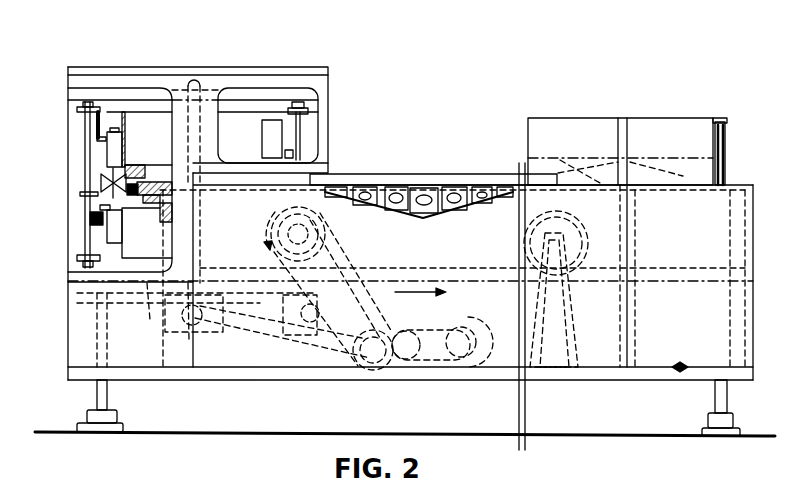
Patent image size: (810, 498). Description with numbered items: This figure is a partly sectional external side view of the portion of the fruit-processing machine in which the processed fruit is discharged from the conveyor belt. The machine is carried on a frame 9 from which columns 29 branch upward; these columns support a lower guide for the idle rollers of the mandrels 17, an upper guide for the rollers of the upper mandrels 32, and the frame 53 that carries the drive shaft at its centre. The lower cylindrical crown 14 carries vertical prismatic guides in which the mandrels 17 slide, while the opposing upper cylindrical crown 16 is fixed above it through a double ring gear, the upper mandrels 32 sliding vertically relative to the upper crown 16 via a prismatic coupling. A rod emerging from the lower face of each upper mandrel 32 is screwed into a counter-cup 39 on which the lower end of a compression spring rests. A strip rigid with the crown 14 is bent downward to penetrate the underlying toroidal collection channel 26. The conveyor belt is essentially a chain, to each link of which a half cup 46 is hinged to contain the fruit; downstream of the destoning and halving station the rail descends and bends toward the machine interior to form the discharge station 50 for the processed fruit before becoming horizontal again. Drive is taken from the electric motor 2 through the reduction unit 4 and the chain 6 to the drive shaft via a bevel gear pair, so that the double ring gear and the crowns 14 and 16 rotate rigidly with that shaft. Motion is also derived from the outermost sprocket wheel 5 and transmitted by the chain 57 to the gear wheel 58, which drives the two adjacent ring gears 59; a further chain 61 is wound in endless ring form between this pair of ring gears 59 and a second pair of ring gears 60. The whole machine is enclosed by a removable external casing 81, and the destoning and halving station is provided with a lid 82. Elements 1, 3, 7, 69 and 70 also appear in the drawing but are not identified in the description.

The machine frame 1 is at (610, 381).
The electric motor 2 is at (497, 350).
The sprocket 3 is at (457, 370).
The reduction unit 4 is at (400, 323).
The outer sprocket wheel 5 is at (375, 357).
The chain 6 is at (250, 343).
The drive rod 7 is at (189, 340).
The frame 9 is at (150, 320).
The lower cylindrical crown 14 is at (136, 247).
The upper cylindrical crown 16 is at (136, 141).
The mandrels 17 is at (113, 250).
The toroidal collection channel 26 is at (75, 284).
The columns 29 is at (85, 134).
The upper mandrels 32 is at (110, 155).
The counter-cup 39 is at (101, 183).
The half cup 46 is at (92, 218).
The discharge station 50 is at (446, 178).
The frame 53 is at (313, 100).
The chain 57 is at (343, 370).
The gear wheel 58 is at (283, 270).
The ring gears 59 is at (343, 237).
The second pair of ring gears 60 is at (575, 243).
The chain 61 is at (437, 268).
The bracket 69 is at (717, 114).
The housing 70 is at (678, 122).
The removable external casing 81 is at (717, 297).
The lid 82 is at (318, 67).